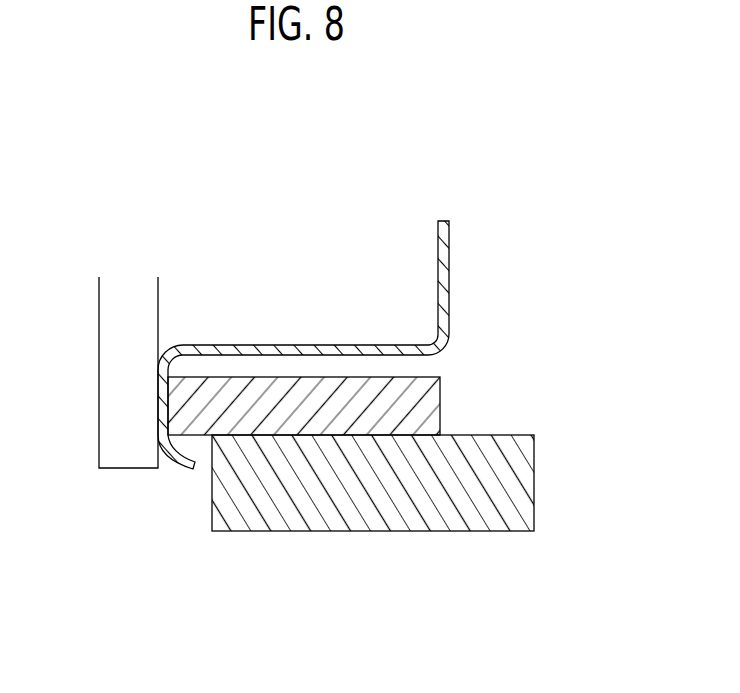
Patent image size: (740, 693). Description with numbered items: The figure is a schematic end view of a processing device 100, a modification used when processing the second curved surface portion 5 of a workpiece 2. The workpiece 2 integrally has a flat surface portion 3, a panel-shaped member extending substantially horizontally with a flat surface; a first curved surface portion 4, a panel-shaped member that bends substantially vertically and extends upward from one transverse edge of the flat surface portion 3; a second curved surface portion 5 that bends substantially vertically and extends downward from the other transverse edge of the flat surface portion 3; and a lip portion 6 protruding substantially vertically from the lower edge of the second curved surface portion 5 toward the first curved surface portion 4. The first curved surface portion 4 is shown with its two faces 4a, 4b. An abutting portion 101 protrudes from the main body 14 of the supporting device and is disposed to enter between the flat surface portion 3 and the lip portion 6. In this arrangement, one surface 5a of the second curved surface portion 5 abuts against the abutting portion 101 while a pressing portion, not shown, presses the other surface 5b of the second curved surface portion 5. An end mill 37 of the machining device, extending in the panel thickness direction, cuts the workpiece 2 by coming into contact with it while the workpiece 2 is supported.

The processing device 100 is at (541, 135).
The workpiece 2 is at (251, 326).
The flat surface portion 3 is at (303, 344).
The first curved surface portion 4 is at (443, 220).
The outer surface of vertical portion 4a is at (449, 253).
The inner surface of vertical portion 4b is at (438, 290).
The second curved surface portion 5 is at (157, 438).
The one surface of the second curved surface portion 5a is at (183, 345).
The other surface of the second curved surface portion 5b is at (158, 407).
The lip portion 6 is at (176, 468).
The end mill 37 is at (99, 333).
The abutting portion 101 is at (440, 392).
The main body 14 is at (395, 532).